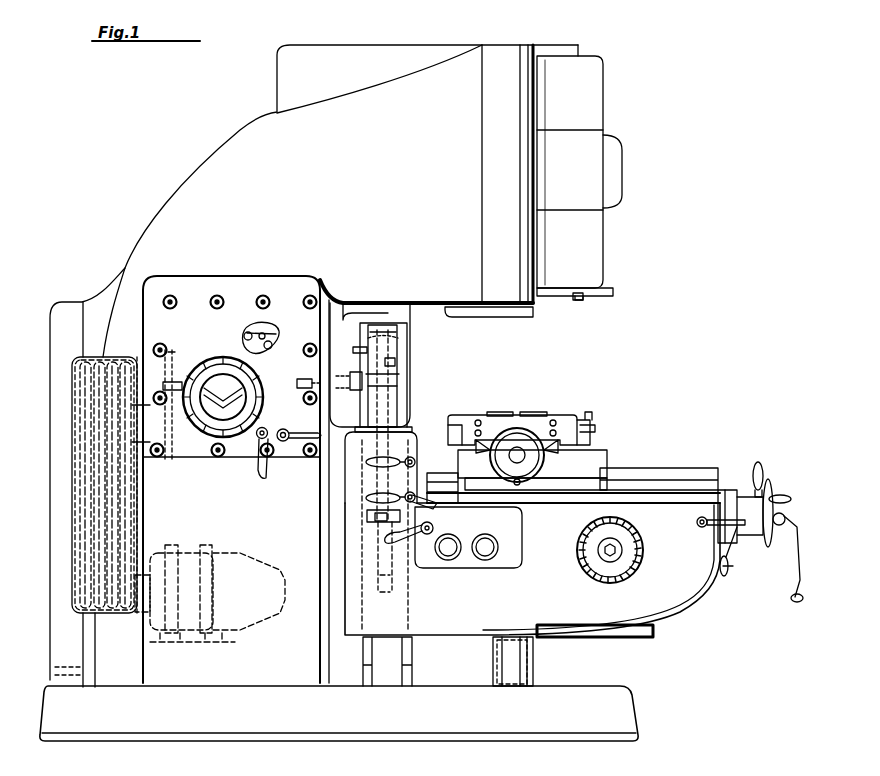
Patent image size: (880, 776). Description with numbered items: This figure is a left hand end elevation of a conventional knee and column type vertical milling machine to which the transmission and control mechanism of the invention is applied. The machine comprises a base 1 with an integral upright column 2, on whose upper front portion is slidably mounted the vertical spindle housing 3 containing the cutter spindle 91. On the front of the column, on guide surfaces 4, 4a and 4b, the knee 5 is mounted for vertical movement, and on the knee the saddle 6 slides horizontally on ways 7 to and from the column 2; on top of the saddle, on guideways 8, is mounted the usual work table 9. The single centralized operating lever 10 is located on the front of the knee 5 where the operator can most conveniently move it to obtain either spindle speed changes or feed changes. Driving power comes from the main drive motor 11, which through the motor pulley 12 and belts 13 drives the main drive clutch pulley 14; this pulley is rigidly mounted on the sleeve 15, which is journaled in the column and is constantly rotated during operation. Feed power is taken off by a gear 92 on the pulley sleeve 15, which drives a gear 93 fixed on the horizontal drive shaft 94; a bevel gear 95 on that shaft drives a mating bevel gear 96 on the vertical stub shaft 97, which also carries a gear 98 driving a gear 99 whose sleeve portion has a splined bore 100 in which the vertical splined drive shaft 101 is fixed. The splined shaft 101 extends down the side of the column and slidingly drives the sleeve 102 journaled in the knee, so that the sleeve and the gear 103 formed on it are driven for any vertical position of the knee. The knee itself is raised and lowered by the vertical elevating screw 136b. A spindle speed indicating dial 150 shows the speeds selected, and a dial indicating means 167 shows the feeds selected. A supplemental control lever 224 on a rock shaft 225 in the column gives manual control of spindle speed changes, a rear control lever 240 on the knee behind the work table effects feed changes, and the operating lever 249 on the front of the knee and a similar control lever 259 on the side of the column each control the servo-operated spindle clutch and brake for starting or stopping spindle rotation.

The base 1 is at (625, 718).
The column 2 is at (190, 177).
The vertical spindle housing 3 is at (605, 165).
The guide surface 4 is at (410, 408).
The guide surface 4a is at (410, 415).
The guide surface 4b is at (360, 430).
The knee 5 is at (452, 623).
The saddle 6 is at (458, 460).
The ways 7 is at (696, 470).
The guideways 8 is at (478, 448).
The work table 9 is at (567, 415).
The operating lever 10 is at (762, 466).
The main drive motor 11 is at (362, 522).
The motor pulley 12 is at (85, 610).
The belts 13 is at (83, 528).
The main drive clutch pulley 14 is at (75, 468).
The sleeve 15 is at (138, 357).
The cutter spindle 91 is at (577, 299).
The gear 92 is at (172, 458).
The gear 93 is at (172, 352).
The drive shaft 94 is at (176, 380).
The bevel gear 95 is at (360, 398).
The bevel gear 96 is at (398, 376).
The stub shaft 97 is at (350, 358).
The gear 98 is at (396, 333).
The gear 99 is at (398, 346).
The splined bore 100 is at (395, 362).
The splined drive shaft 101 is at (398, 389).
The sleeve 102 is at (318, 560).
The gear 103 is at (370, 516).
The vertical elevating screw 136b is at (530, 654).
The spindle speed indicating dial 150 is at (205, 436).
The dial indicating means 167 is at (592, 583).
The supplemental control lever 224 is at (270, 470).
The rock shaft 225 is at (259, 446).
The rear control lever 240 is at (363, 492).
The operating lever 249 is at (771, 486).
The control lever 259 is at (316, 433).